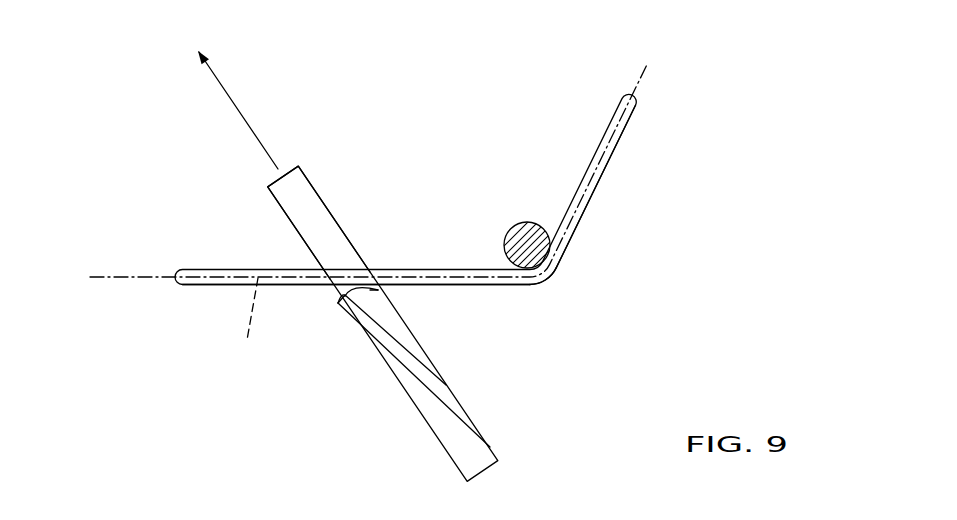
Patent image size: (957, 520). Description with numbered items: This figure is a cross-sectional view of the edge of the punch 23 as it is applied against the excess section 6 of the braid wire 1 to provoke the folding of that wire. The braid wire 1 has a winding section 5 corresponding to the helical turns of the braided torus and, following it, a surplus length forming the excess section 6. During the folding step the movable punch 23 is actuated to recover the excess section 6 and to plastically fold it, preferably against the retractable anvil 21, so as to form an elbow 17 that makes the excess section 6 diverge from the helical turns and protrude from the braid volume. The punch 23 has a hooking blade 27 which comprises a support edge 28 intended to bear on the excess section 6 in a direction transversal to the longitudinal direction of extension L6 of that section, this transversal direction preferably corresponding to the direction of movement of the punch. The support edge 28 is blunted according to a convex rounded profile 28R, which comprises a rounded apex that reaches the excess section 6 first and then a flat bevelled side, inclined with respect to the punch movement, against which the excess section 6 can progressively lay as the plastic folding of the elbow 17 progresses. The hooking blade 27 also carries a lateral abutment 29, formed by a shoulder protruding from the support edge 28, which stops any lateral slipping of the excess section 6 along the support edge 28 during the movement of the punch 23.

The braid wire 1 is at (593, 195).
The winding section 5 is at (634, 137).
The excess section 6 is at (195, 296).
The elbow 17 is at (552, 289).
The anvil 21 is at (522, 238).
The punch 23 is at (485, 423).
The hooking blade 27 is at (422, 394).
The support edge 28 is at (380, 274).
The convex rounded profile 28R is at (350, 272).
The lateral abutment 29 is at (293, 205).
The longitudinal direction of extension L6 is at (249, 323).